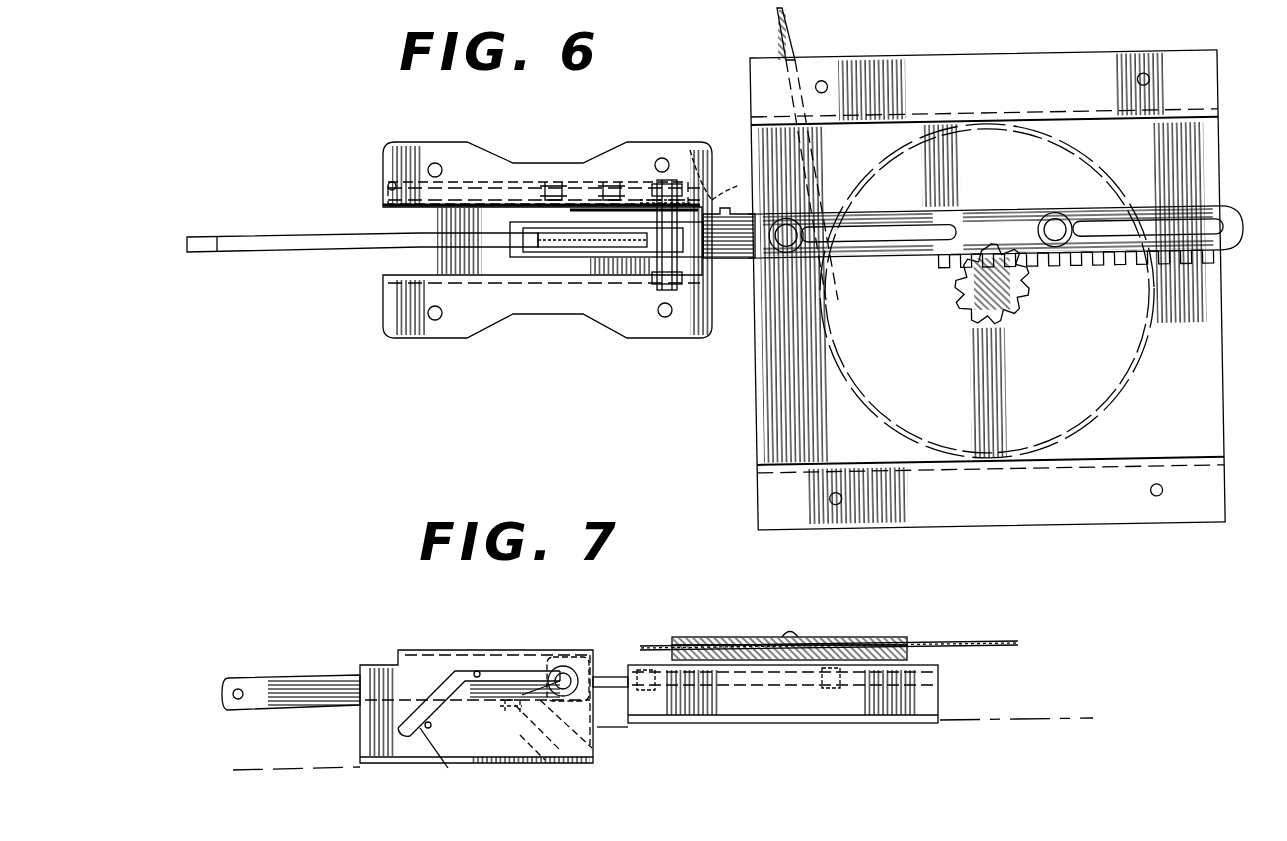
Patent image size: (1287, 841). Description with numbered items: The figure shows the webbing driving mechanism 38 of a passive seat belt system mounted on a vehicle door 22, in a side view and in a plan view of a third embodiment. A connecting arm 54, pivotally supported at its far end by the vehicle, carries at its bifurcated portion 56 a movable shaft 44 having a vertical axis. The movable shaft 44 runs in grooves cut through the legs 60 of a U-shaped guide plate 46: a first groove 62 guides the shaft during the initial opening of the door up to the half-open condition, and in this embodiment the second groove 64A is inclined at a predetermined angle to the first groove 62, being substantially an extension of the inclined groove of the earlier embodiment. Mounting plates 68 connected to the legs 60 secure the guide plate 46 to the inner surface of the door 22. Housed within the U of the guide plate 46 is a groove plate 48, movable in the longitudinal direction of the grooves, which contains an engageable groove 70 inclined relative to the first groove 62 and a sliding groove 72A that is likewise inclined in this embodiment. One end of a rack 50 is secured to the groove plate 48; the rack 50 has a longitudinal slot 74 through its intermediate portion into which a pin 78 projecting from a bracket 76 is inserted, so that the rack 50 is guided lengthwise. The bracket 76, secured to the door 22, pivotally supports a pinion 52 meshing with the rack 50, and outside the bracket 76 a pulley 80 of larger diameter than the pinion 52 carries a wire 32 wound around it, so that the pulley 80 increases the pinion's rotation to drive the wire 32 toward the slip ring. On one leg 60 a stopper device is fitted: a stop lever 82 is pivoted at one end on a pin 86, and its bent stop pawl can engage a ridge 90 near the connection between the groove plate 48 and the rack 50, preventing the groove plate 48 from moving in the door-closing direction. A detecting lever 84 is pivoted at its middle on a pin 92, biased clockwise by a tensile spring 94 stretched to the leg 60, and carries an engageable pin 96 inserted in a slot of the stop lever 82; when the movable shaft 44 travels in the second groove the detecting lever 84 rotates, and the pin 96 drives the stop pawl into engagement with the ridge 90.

In FIG. 7, the door 22 is at (1005, 720).
In FIG. 7, the wire 32 is at (958, 642).
In FIG. 7, the driving mechanism 38 is at (717, 636).
In FIG. 6, the movable shaft 44 is at (670, 195).
In FIG. 7, the movable shaft 44 is at (565, 666).
In FIG. 6, the guide plate 46 is at (440, 215).
In FIG. 7, the guide plate 46 is at (420, 651).
In FIG. 6, the groove plate 48 is at (600, 248).
In FIG. 7, the groove plate 48 is at (528, 670).
In FIG. 6, the rack 50 is at (858, 258).
In FIG. 7, the rack 50 is at (607, 676).
In FIG. 6, the pinion 52 is at (962, 310).
In FIG. 6, the connecting arm 54 is at (316, 250).
In FIG. 7, the connecting arm 54 is at (310, 680).
In FIG. 6, the bifurcated portion 56 is at (572, 258).
In FIG. 6, the legs 60 is at (732, 180).
In FIG. 7, the first groove 62 is at (475, 670).
In FIG. 7, the second groove 64A is at (457, 763).
In FIG. 6, the mounting plates 68 is at (478, 160).
In FIG. 7, the mounting plates 68 is at (378, 764).
In FIG. 7, the engageable groove 70 is at (598, 760).
In FIG. 7, the sliding groove 72A is at (482, 719).
In FIG. 6, the slot 74 is at (898, 230).
In FIG. 6, the bracket 76 is at (1218, 290).
In FIG. 7, the bracket 76 is at (935, 692).
In FIG. 6, the pin 78 is at (786, 254).
In FIG. 6, the pulley 80 is at (1088, 165).
In FIG. 7, the pulley 80 is at (840, 644).
In FIG. 6, the stop lever 82 is at (652, 215).
In FIG. 6, the detecting lever 84 is at (480, 186).
In FIG. 6, the pin 86 is at (722, 165).
In FIG. 6, the ridge 90 is at (735, 212).
In FIG. 6, the pin 92 is at (551, 180).
In FIG. 6, the tensile spring 94 is at (388, 190).
In FIG. 6, the engageable pin 96 is at (610, 180).